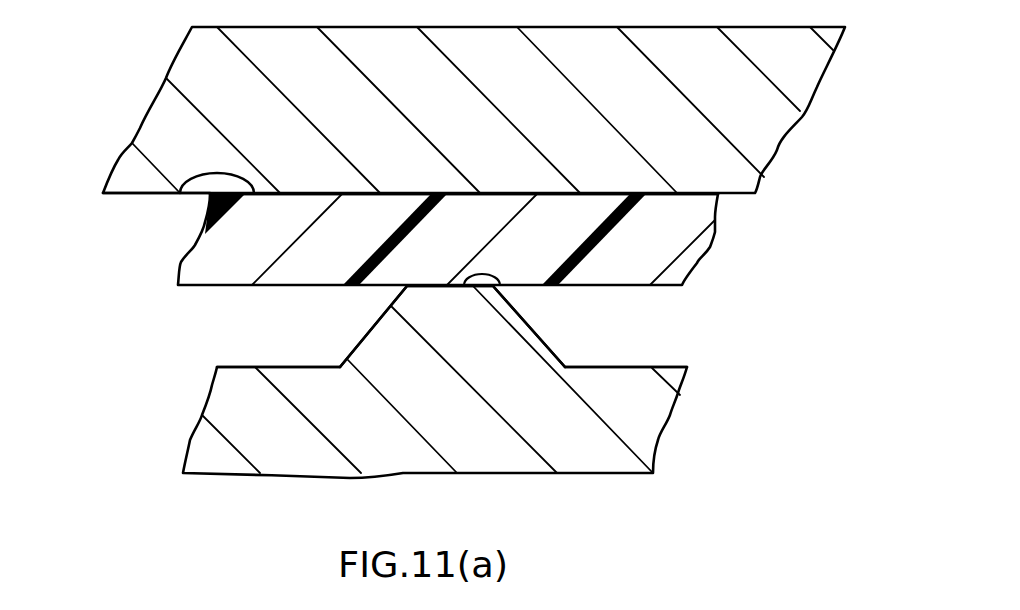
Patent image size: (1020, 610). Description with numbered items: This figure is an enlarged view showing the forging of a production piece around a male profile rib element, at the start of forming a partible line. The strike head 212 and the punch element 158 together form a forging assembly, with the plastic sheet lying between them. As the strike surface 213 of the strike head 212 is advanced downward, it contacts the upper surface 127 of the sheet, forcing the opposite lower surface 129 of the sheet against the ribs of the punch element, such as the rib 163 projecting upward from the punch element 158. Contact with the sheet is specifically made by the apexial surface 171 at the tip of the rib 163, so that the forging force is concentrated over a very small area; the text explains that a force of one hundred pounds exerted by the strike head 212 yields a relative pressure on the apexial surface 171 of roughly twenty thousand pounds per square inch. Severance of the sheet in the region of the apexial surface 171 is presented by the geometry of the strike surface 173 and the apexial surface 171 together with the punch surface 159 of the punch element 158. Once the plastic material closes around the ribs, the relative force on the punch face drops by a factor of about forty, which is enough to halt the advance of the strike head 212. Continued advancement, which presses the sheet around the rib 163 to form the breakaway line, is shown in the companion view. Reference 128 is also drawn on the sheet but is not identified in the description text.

The strike head 212 is at (760, 127).
The strike surface 213 is at (657, 172).
The strike surface 173 is at (135, 197).
The surface of sheet 127 is at (178, 197).
The intermediate plate 128 is at (238, 268).
The surface of sheet 129 is at (348, 287).
The apexial surface 171 is at (493, 286).
The rib 163 is at (507, 358).
The punch surface 159 is at (628, 367).
The punch element 158 is at (658, 403).